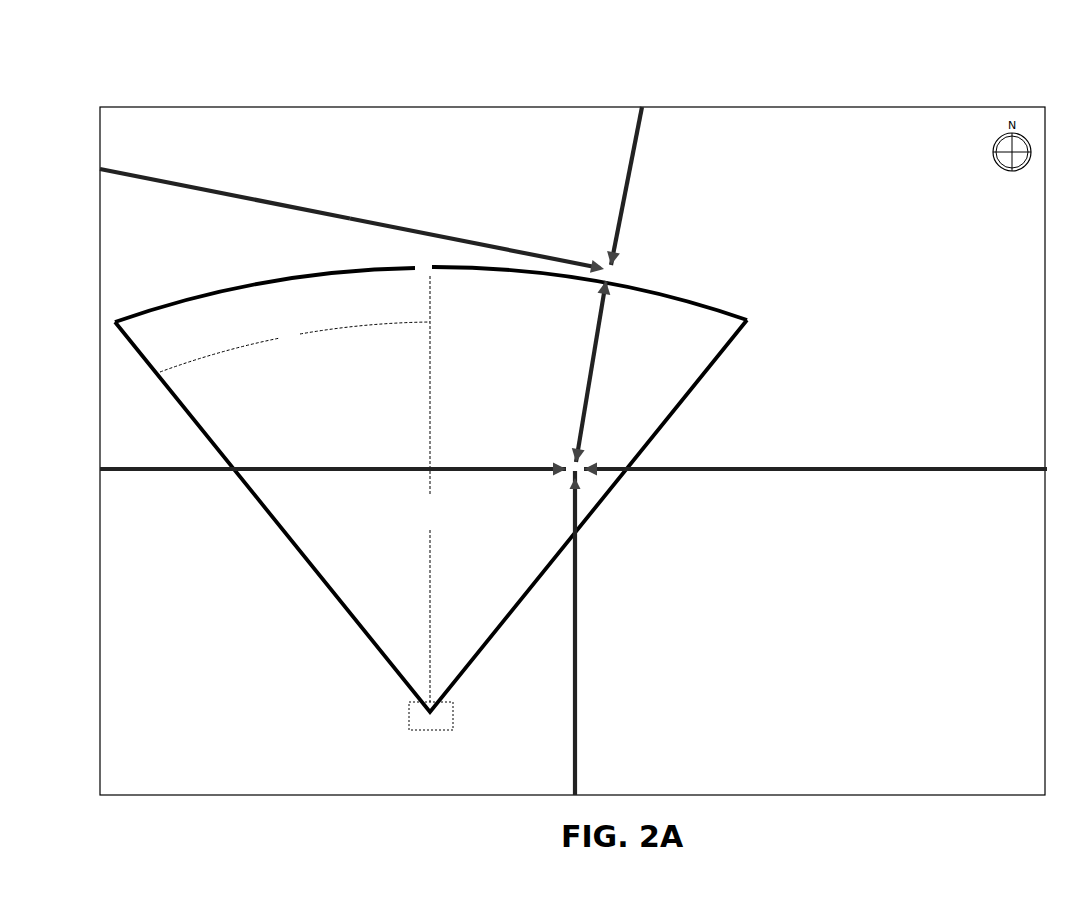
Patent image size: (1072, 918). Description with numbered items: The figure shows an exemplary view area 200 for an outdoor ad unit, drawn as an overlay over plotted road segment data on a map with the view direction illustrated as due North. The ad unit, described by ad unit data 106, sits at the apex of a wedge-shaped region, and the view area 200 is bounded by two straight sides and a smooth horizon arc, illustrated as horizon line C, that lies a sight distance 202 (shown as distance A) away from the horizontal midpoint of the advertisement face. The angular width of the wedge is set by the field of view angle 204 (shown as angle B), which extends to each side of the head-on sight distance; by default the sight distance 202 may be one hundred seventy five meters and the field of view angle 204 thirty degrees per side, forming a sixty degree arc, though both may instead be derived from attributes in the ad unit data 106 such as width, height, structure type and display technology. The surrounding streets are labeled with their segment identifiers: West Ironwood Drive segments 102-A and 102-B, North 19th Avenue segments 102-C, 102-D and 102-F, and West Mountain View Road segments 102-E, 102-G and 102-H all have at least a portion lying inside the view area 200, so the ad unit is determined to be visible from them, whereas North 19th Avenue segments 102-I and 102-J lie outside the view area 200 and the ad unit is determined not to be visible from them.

The road segment data 102-A is at (195, 177).
The road segment data 102-B is at (422, 185).
The road segment data 102-C is at (577, 310).
The road segment data 102-D is at (632, 310).
The road segment data 102-E is at (313, 473).
The road segment data 102-F is at (535, 685).
The road segment data 102-G is at (732, 477).
The road segment data 102-H is at (912, 477).
The road segment data 102-I is at (577, 127).
The road segment data 102-J is at (680, 120).
The ad unit data 106 is at (430, 730).
The view area 200 is at (247, 495).
The sight distance 202 is at (432, 455).
The field of view angle 204 is at (310, 332).